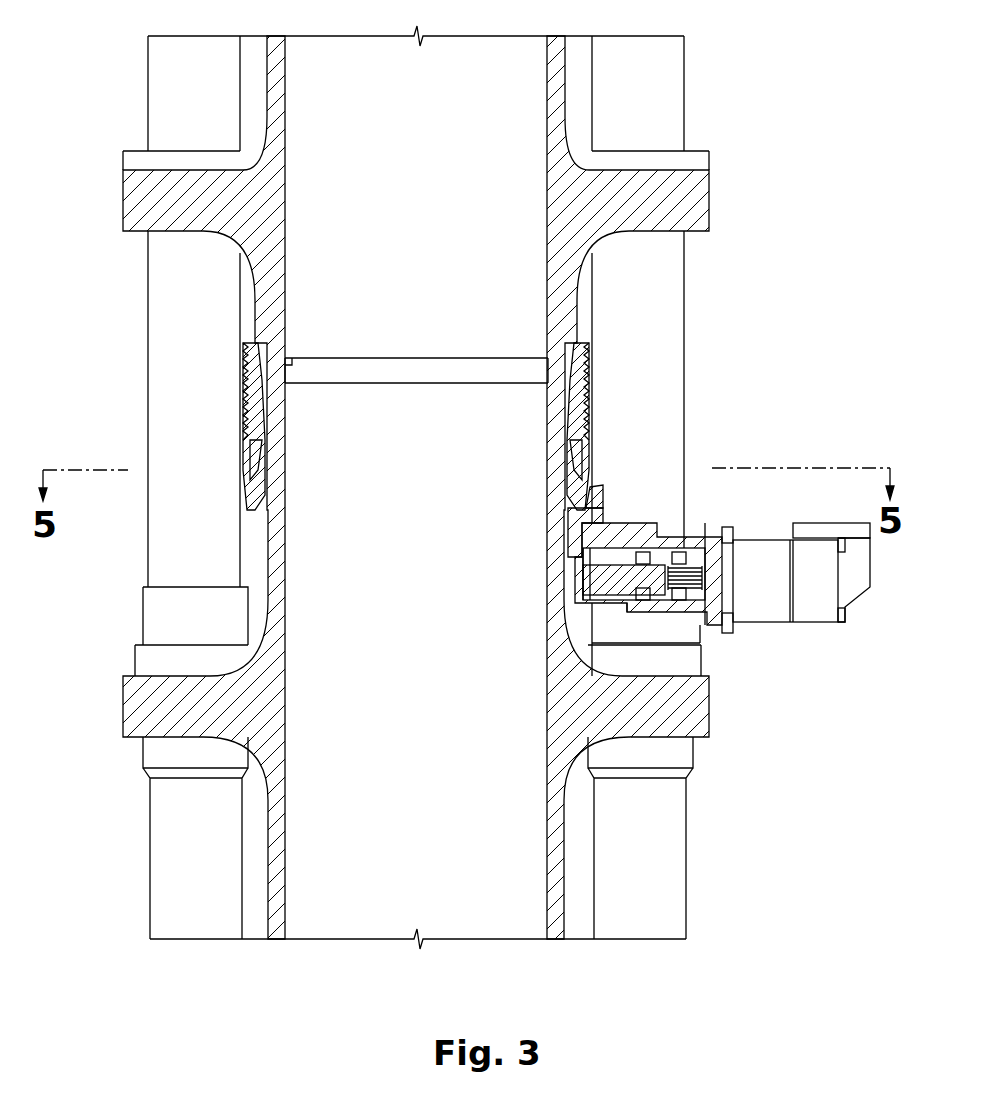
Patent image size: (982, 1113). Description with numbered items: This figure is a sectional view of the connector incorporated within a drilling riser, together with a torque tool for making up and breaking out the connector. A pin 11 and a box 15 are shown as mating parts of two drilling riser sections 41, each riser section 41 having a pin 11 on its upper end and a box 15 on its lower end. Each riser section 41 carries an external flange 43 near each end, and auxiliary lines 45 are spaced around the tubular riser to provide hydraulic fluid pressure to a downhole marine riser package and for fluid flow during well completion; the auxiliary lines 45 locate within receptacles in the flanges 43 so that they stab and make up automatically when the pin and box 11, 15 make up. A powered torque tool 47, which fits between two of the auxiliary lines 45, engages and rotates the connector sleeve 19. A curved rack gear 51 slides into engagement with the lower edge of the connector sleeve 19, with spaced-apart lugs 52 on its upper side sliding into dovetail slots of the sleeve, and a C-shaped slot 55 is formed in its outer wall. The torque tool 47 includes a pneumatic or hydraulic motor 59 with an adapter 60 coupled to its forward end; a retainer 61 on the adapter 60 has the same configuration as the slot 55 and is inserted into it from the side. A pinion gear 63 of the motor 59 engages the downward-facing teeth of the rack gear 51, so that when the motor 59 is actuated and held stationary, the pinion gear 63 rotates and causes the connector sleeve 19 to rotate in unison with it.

The pin 11 is at (280, 451).
The box 15 is at (272, 303).
The connector sleeve 19 is at (245, 435).
The drilling riser section 41 is at (277, 68).
The external flange 43 is at (140, 203).
The auxiliary lines 45 is at (175, 275).
The torque tool 47 is at (773, 510).
The rack gear 51 is at (578, 557).
The lug 52 is at (598, 490).
The slot 55 is at (578, 547).
The motor 59 is at (748, 603).
The adapter 60 is at (630, 530).
The retainer 61 is at (608, 523).
The pinion gear 63 is at (590, 612).